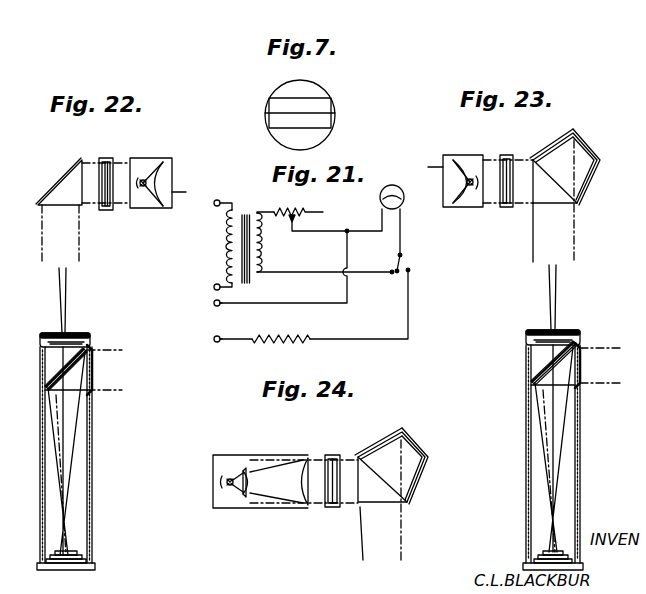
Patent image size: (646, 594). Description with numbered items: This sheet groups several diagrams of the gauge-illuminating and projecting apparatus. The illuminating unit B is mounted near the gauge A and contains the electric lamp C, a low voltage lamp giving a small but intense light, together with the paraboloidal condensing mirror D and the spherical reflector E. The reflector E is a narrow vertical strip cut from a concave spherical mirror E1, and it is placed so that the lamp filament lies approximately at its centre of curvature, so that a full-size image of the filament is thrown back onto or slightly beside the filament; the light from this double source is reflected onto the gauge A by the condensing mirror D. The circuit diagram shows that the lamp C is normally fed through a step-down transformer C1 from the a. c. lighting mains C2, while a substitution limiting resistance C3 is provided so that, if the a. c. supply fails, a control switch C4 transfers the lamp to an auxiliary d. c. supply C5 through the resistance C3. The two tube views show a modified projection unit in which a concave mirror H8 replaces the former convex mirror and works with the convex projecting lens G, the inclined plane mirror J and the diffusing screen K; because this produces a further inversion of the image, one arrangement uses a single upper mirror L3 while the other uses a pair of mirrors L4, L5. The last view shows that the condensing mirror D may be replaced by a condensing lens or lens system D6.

In FIG. 22, the single mirror L3 is at (67, 177).
In FIG. 22, the gauge A is at (105, 158).
In FIG. 23, the gauge A is at (505, 155).
In FIG. 24, the gauge A is at (333, 455).
In FIG. 22, the illuminating unit B is at (163, 162).
In FIG. 23, the illuminating unit B is at (445, 155).
In FIG. 24, the illuminating unit B is at (216, 455).
In FIG. 22, the electric lamp C is at (144, 190).
In FIG. 21, the electric lamp C is at (381, 196).
In FIG. 23, the electric lamp C is at (470, 178).
In FIG. 24, the electric lamp C is at (231, 478).
In FIG. 22, the paraboloidal condensing mirror D is at (185, 193).
In FIG. 23, the paraboloidal condensing mirror D is at (427, 168).
In FIG. 22, the spherical reflector E is at (138, 178).
In FIG. 7, the spherical reflector E is at (327, 124).
In FIG. 23, the spherical reflector E is at (473, 190).
In FIG. 24, the spherical reflector E is at (222, 482).
In FIG. 7, the concave spherical mirror E1 is at (295, 92).
In FIG. 22, the convex projecting lens G is at (43, 348).
In FIG. 23, the convex projecting lens G is at (542, 345).
In FIG. 22, the inclined plane mirror J is at (48, 378).
In FIG. 23, the inclined plane mirror J is at (540, 377).
In FIG. 22, the diffusing screen K is at (92, 368).
In FIG. 23, the diffusing screen K is at (582, 365).
In FIG. 22, the concave mirror H8 is at (68, 553).
In FIG. 23, the concave mirror H8 is at (553, 552).
In FIG. 21, the step-down transformer C1 is at (245, 216).
In FIG. 21, the a. c. lighting mains C2 is at (216, 283).
In FIG. 21, the substitution limiting resistance C3 is at (290, 334).
In FIG. 21, the control switch C4 is at (403, 257).
In FIG. 21, the auxiliary d. c. supply C5 is at (216, 337).
In FIG. 23, the upper mirror L5 is at (548, 150).
In FIG. 23, the upper mirror L4 is at (586, 186).
In FIG. 24, the condensing lens system D6 is at (300, 490).